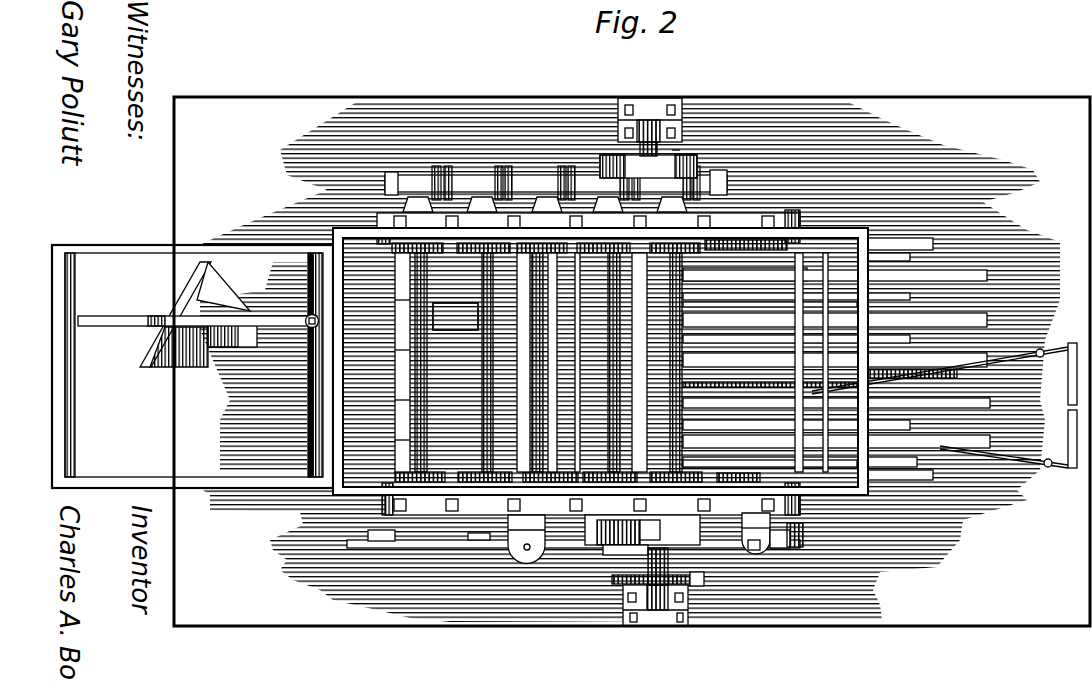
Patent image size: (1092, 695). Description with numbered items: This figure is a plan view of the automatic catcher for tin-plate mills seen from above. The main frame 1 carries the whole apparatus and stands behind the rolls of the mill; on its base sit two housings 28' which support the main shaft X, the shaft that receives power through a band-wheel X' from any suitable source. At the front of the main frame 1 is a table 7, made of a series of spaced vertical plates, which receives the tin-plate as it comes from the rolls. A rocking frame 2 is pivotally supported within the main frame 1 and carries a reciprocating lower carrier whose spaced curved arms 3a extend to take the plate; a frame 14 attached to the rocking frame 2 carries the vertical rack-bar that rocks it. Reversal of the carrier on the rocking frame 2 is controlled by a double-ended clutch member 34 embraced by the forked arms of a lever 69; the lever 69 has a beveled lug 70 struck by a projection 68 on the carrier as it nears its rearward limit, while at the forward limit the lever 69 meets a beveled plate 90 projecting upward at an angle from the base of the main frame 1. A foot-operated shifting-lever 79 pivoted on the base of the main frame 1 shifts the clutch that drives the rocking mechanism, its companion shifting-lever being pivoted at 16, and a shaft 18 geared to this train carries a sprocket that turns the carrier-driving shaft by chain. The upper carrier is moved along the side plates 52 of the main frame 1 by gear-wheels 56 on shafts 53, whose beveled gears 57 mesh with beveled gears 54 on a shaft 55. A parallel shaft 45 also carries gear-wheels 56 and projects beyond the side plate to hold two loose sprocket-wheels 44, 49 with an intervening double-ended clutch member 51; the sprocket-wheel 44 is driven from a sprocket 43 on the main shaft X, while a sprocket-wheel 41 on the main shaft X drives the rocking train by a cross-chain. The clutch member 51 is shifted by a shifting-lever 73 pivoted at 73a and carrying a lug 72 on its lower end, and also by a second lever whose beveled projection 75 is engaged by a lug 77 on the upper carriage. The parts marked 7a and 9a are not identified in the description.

The main frame 1 is at (335, 500).
The rocking frame 2 is at (150, 478).
The curved arms 3a is at (907, 250).
The table 7 is at (942, 280).
The link 7a is at (988, 352).
The rod 9a is at (745, 460).
The frame 14 is at (578, 514).
The pivot 16 is at (474, 549).
The shaft 18 is at (373, 536).
The housings 28' is at (653, 367).
The double-ended clutch member 34 is at (307, 312).
The sprocket-wheel 41 is at (660, 530).
The sprocket 43 is at (607, 581).
The sprocket-wheel 44 is at (698, 578).
The shaft 45 is at (692, 306).
The sprocket-wheel 49 is at (757, 543).
The double-ended clutch member 51 is at (622, 514).
The side plates 52 is at (523, 364).
The shafts 53 is at (484, 407).
The beveled gears 54 is at (563, 168).
The shaft 55 is at (465, 176).
The gear-wheels 56 is at (366, 238).
The beveled gears 57 is at (540, 196).
The projection 68 is at (440, 302).
The lever 69 is at (445, 310).
The beveled lug 70 is at (220, 303).
The lug 72 is at (807, 531).
The shifting-lever 73 is at (778, 548).
The pivot 73a is at (753, 550).
The beveled projection 75 is at (615, 546).
The lug 77 is at (468, 531).
The shifting-lever 79 is at (1068, 346).
The beveled plate 90 is at (168, 368).
The main shaft X is at (698, 132).
The band-wheel X' is at (709, 146).